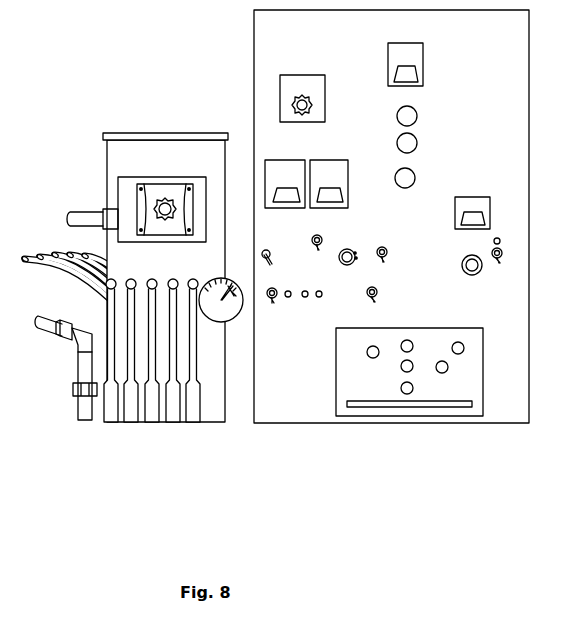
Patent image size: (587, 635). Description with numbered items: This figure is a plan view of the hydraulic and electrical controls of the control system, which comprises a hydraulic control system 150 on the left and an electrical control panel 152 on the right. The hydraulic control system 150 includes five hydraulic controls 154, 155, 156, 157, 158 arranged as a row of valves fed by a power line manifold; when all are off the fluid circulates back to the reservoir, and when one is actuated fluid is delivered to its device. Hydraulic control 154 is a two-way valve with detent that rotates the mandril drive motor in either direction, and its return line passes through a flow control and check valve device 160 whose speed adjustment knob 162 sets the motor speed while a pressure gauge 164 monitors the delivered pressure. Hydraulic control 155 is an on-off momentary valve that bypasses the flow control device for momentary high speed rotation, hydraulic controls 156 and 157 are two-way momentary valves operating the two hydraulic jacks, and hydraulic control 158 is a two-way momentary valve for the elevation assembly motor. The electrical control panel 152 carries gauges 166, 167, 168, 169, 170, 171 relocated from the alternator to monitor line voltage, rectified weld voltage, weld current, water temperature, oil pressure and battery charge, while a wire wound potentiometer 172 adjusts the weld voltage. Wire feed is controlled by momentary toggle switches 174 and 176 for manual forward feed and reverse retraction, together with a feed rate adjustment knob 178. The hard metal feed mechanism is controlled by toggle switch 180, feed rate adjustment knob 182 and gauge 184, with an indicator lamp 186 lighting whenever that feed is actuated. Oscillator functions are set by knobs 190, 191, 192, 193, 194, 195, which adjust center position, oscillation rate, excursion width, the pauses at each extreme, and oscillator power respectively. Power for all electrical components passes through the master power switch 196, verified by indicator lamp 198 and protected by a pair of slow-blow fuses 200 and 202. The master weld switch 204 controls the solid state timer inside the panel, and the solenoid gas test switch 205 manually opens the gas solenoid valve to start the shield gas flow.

The hydraulic control system 150 is at (130, 446).
The electrical control panel 152 is at (364, 425).
The hydraulic control 154 is at (100, 418).
The hydraulic control 155 is at (128, 420).
The hydraulic control 156 is at (146, 420).
The hydraulic control 157 is at (180, 420).
The hydraulic control 158 is at (200, 420).
The flow control and check valve device 160 is at (118, 190).
The speed adjustment knob 162 is at (165, 200).
The pressure gauge 164 is at (209, 280).
The gauge 166 is at (404, 43).
The gauge 167 is at (303, 143).
The gauge 168 is at (325, 160).
The gauge 169 is at (416, 111).
The gauge 170 is at (416, 138).
The gauge 171 is at (414, 173).
The potentiometer 172 is at (327, 47).
The momentary toggle switch 174 is at (266, 250).
The momentary toggle switch 176 is at (318, 235).
The feed rate adjustment knob 178 is at (352, 249).
The toggle switch 180 is at (503, 253).
The feed rate adjustment knob 182 is at (478, 273).
The gauge 184 is at (478, 197).
The indicator lamp 186 is at (500, 240).
The knob 190 is at (408, 394).
The knob 191 is at (413, 368).
The width adjustment knob 192 is at (411, 341).
The knob 193 is at (370, 357).
The knob 194 is at (449, 367).
The knob 195 is at (464, 348).
The master power switch 196 is at (275, 288).
The indicator lamp 198 is at (288, 297).
The slow-blow fuse 200 is at (305, 297).
The slow-blow fuse 202 is at (319, 297).
The master weld switch 204 is at (376, 300).
The solenoid gas test switch 205 is at (388, 250).